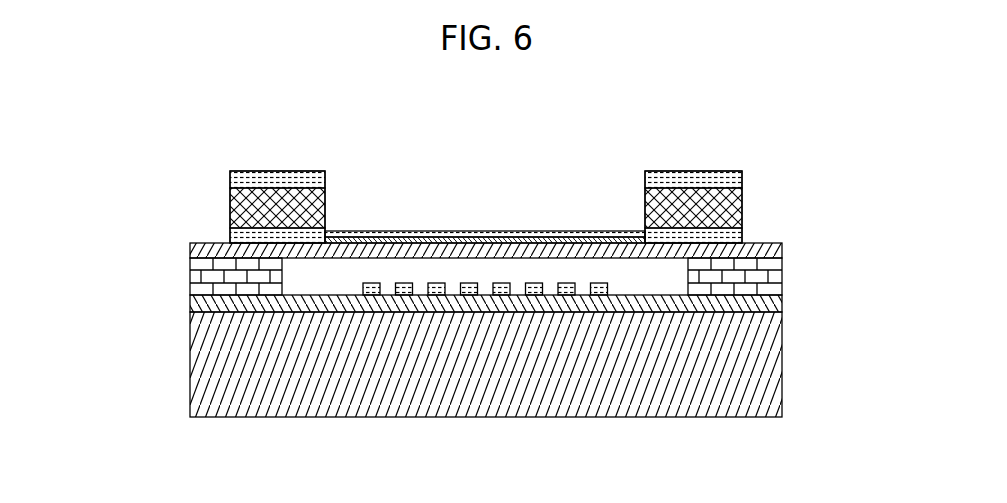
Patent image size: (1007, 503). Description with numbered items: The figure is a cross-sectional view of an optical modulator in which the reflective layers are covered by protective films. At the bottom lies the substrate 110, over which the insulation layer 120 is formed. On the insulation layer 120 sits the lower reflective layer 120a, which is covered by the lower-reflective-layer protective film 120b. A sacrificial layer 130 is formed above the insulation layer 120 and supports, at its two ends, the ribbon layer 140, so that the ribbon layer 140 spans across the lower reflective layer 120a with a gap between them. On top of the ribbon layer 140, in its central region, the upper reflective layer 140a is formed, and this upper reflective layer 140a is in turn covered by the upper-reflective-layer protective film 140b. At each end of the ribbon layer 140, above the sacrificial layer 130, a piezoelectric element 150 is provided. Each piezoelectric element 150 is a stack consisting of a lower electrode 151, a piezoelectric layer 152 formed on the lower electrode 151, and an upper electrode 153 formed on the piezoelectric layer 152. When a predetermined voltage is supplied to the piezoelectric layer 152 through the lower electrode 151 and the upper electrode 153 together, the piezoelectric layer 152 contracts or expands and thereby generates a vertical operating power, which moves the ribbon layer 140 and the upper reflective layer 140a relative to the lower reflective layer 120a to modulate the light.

The substrate 110 is at (770, 375).
The insulation layer 120 is at (770, 304).
The lower reflective layer 120a is at (531, 296).
The lower-reflective-layer protective film 120b is at (606, 284).
The sacrificial layer 130 is at (770, 270).
The ribbon layer 140 is at (775, 243).
The upper reflective layer 140a is at (400, 231).
The upper-reflective-layer protective film 140b is at (470, 231).
The piezoelectric elements 150 is at (400, 196).
The lower electrode 151 is at (439, 235).
The piezoelectric layer 152 is at (228, 200).
The upper electrode 153 is at (228, 173).